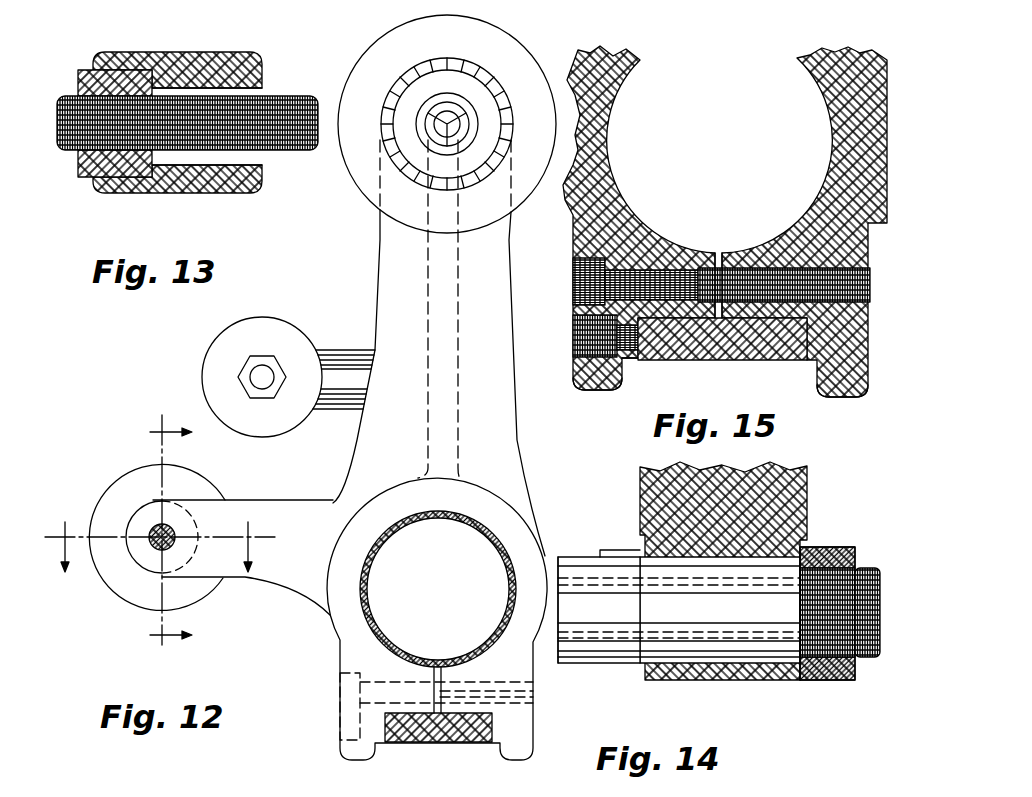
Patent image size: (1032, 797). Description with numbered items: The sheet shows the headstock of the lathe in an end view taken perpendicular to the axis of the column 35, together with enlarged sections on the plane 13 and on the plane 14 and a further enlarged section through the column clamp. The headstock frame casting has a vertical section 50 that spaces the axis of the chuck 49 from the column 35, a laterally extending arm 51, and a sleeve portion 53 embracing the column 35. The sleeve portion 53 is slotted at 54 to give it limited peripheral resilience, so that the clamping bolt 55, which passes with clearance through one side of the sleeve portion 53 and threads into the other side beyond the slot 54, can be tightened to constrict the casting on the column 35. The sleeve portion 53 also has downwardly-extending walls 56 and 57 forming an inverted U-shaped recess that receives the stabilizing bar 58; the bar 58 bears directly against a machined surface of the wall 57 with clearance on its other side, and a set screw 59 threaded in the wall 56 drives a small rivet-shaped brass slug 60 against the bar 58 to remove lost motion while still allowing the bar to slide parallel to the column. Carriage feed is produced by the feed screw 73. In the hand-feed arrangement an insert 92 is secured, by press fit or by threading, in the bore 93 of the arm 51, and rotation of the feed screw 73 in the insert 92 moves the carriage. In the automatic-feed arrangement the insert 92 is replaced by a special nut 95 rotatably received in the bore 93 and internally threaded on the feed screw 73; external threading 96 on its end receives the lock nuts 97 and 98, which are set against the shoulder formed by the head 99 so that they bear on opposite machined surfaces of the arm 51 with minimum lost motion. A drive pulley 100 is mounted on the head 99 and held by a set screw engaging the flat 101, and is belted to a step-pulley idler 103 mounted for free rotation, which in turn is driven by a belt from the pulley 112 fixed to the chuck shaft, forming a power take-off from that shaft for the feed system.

In FIG. 12, the section plane 13— 13 is at (151, 531).
In FIG. 12, the section plane 14— 14 is at (160, 524).
In FIG. 12, the column 35 is at (512, 580).
In FIG. 12, the chuck 49 is at (397, 157).
In FIG. 12, the vertical section 50 is at (378, 267).
In FIG. 13, the laterally extending arm 51 is at (231, 199).
In FIG. 12, the laterally extending arm 51 is at (277, 588).
In FIG. 14, the laterally extending arm 51 is at (727, 688).
In FIG. 12, the sleeve portion 53 is at (328, 618).
In FIG. 15, the sleeve portion 53 is at (617, 172).
In FIG. 15, the slot 54 is at (720, 255).
In FIG. 12, the clamping bolt 55 is at (342, 690).
In FIG. 15, the clamping bolt 55 is at (870, 282).
In FIG. 15, the downwardly-extending wall 56 is at (603, 398).
In FIG. 15, the downwardly-extending wall 57 is at (836, 400).
In FIG. 12, the stabilizing bar 58 is at (447, 745).
In FIG. 15, the stabilizing bar 58 is at (770, 363).
In FIG. 15, the set screw 59 is at (573, 331).
In FIG. 15, the brass slug 60 is at (648, 362).
In FIG. 13, the feed screw 73 is at (292, 100).
In FIG. 13, the insert 92 is at (80, 178).
In FIG. 13, the bore 93 is at (253, 157).
In FIG. 14, the special nut 95 is at (620, 672).
In FIG. 14, the external threading 96 is at (870, 660).
In FIG. 14, the lock nut 97 is at (812, 684).
In FIG. 14, the lock nut 98 is at (843, 684).
In FIG. 14, the head 99 is at (580, 665).
In FIG. 12, the drive pulley 100 is at (98, 580).
In FIG. 14, the flat 101 is at (580, 556).
In FIG. 12, the step-pulley idler 103 is at (210, 347).
In FIG. 12, the pulley 112 is at (372, 48).